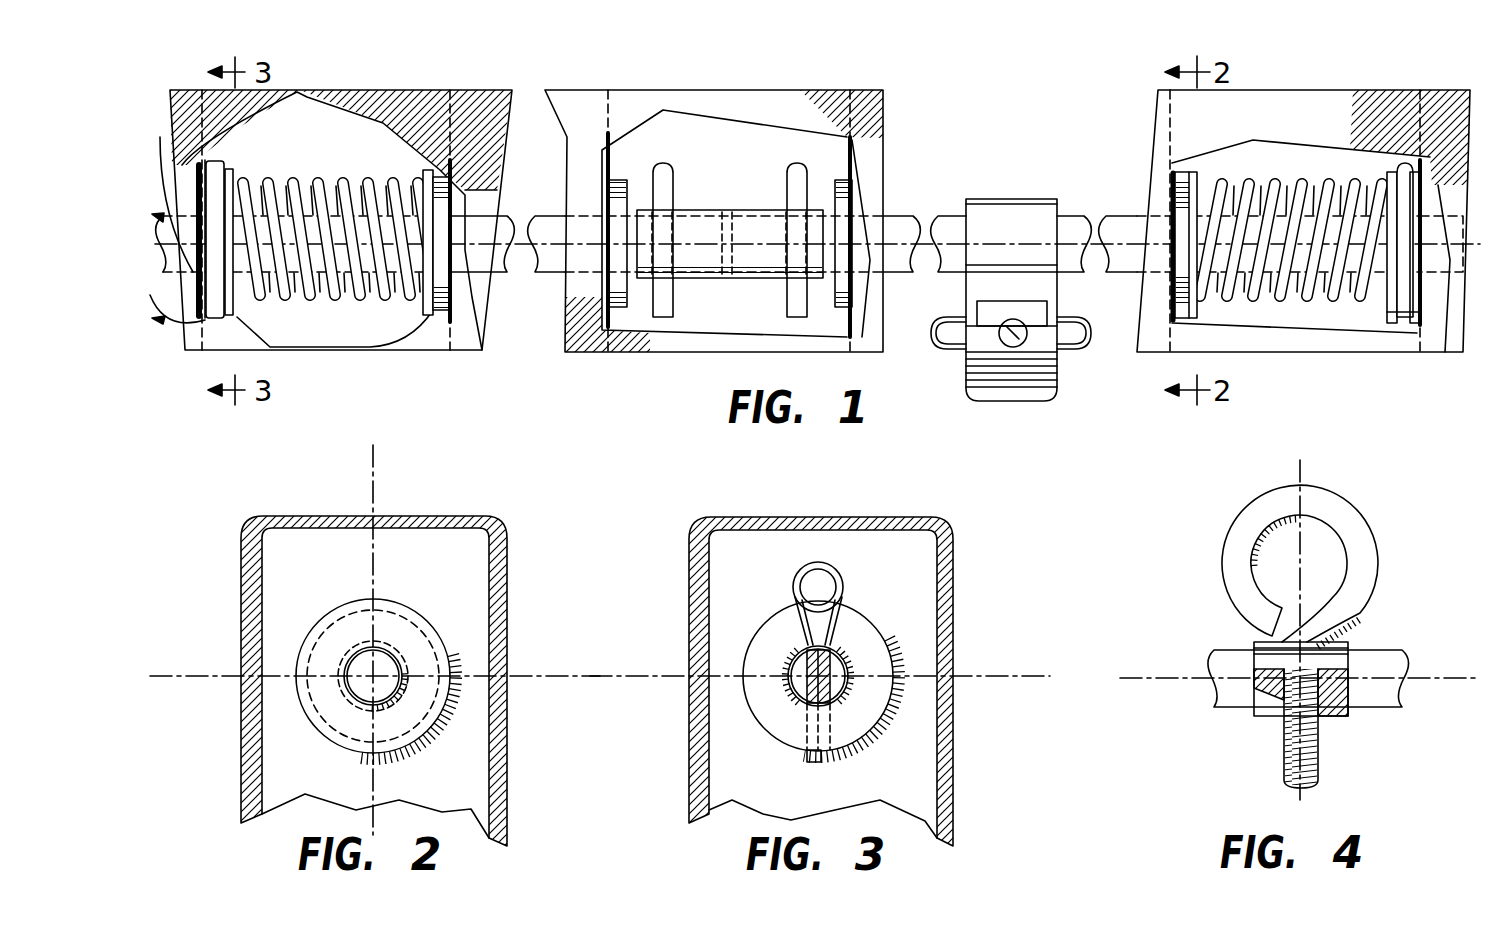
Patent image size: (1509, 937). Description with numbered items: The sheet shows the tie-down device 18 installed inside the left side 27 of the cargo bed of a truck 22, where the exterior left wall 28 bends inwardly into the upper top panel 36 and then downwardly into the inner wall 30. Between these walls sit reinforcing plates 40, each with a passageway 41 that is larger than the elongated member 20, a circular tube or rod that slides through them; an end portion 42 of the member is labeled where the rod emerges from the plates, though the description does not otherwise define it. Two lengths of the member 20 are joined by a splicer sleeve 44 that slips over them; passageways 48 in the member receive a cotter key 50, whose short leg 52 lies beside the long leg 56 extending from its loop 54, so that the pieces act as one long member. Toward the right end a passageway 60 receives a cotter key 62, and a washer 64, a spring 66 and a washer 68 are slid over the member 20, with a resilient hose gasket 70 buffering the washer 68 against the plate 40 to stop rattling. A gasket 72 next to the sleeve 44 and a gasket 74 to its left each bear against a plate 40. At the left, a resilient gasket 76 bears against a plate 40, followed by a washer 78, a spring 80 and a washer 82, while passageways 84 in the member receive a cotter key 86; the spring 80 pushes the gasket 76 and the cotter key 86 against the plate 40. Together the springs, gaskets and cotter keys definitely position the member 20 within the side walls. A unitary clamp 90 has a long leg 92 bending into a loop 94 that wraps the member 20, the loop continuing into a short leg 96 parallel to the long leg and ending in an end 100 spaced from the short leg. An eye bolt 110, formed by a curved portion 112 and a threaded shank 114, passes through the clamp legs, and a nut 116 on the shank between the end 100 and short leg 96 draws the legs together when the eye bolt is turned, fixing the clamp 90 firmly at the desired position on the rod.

In FIG. 1, the tie-down device 18 is at (540, 276).
In FIG. 2, the tie-down device 18 is at (345, 690).
In FIG. 3, the tie-down device 18 is at (803, 701).
In FIG. 4, the tie-down device 18 is at (1220, 669).
In FIG. 1, the elongated member 20 is at (1066, 216).
In FIG. 2, the elongated member 20 is at (363, 640).
In FIG. 3, the elongated member 20 is at (843, 658).
In FIG. 4, the elongated member 20 is at (1247, 707).
In FIG. 2, the truck 22 is at (403, 512).
In FIG. 3, the truck 22 is at (748, 513).
In FIG. 2, the left side 27 is at (251, 522).
In FIG. 3, the left side 27 is at (694, 535).
In FIG. 1, the exterior left wall 28 is at (338, 88).
In FIG. 2, the exterior left wall 28 is at (244, 748).
In FIG. 3, the exterior left wall 28 is at (687, 775).
In FIG. 1, the inner wall 30 is at (715, 352).
In FIG. 2, the inner wall 30 is at (508, 752).
In FIG. 3, the inner wall 30 is at (953, 798).
In FIG. 1, the upper top panel 36 is at (350, 100).
In FIG. 2, the upper top panel 36 is at (347, 514).
In FIG. 3, the upper top panel 36 is at (835, 515).
In FIG. 1, the reinforcing plates 40 is at (462, 118).
In FIG. 2, the reinforcing plates 40 is at (466, 605).
In FIG. 3, the reinforcing plates 40 is at (727, 623).
In FIG. 2, the passageway 41 is at (378, 656).
In FIG. 3, the passageway 41 is at (803, 640).
In FIG. 1, the rod end portion 42 is at (878, 200).
In FIG. 3, the rod end portion 42 is at (792, 683).
In FIG. 1, the splicer sleeve 44 is at (745, 255).
In FIG. 1, the passageways 48 is at (790, 240).
In FIG. 1, the cotter key 50 is at (790, 180).
In FIG. 3, the cotter key 50 is at (830, 565).
In FIG. 3, the short leg 52 is at (876, 760).
In FIG. 3, the loop 54 is at (843, 597).
In FIG. 3, the long leg 56 is at (817, 758).
In FIG. 1, the passageway 60 is at (1412, 322).
In FIG. 1, the cotter key 62 is at (1430, 137).
In FIG. 1, the washer 64 is at (1385, 315).
In FIG. 1, the spring 66 is at (1291, 221).
In FIG. 1, the washer 68 is at (1194, 168).
In FIG. 1, the hose gasket 70 is at (1182, 307).
In FIG. 1, the gasket 72 is at (845, 140).
In FIG. 2, the gasket 72 is at (296, 672).
In FIG. 1, the gasket 74 is at (626, 180).
In FIG. 1, the gasket 76 is at (447, 314).
In FIG. 1, the washer 78 is at (428, 318).
In FIG. 2, the washer 78 is at (413, 608).
In FIG. 1, the spring 80 is at (262, 180).
In FIG. 1, the washer 82 is at (216, 300).
In FIG. 1, the passageways 84 is at (233, 262).
In FIG. 1, the cotter key 86 is at (196, 305).
In FIG. 1, the clamp 90 is at (1021, 318).
In FIG. 4, the clamp 90 is at (1299, 657).
In FIG. 4, the long leg 92 is at (1336, 644).
In FIG. 1, the loop 94 is at (1012, 199).
In FIG. 4, the loop 94 is at (1270, 707).
In FIG. 1, the short leg 96 is at (992, 285).
In FIG. 1, the end 100 is at (988, 360).
In FIG. 1, the eye bolt 110 is at (926, 333).
In FIG. 4, the eye bolt 110 is at (1299, 566).
In FIG. 4, the curved portion 112 is at (1372, 541).
In FIG. 1, the threaded shank 114 is at (1020, 347).
In FIG. 4, the threaded shank 114 is at (1305, 773).
In FIG. 1, the nut 116 is at (1063, 301).